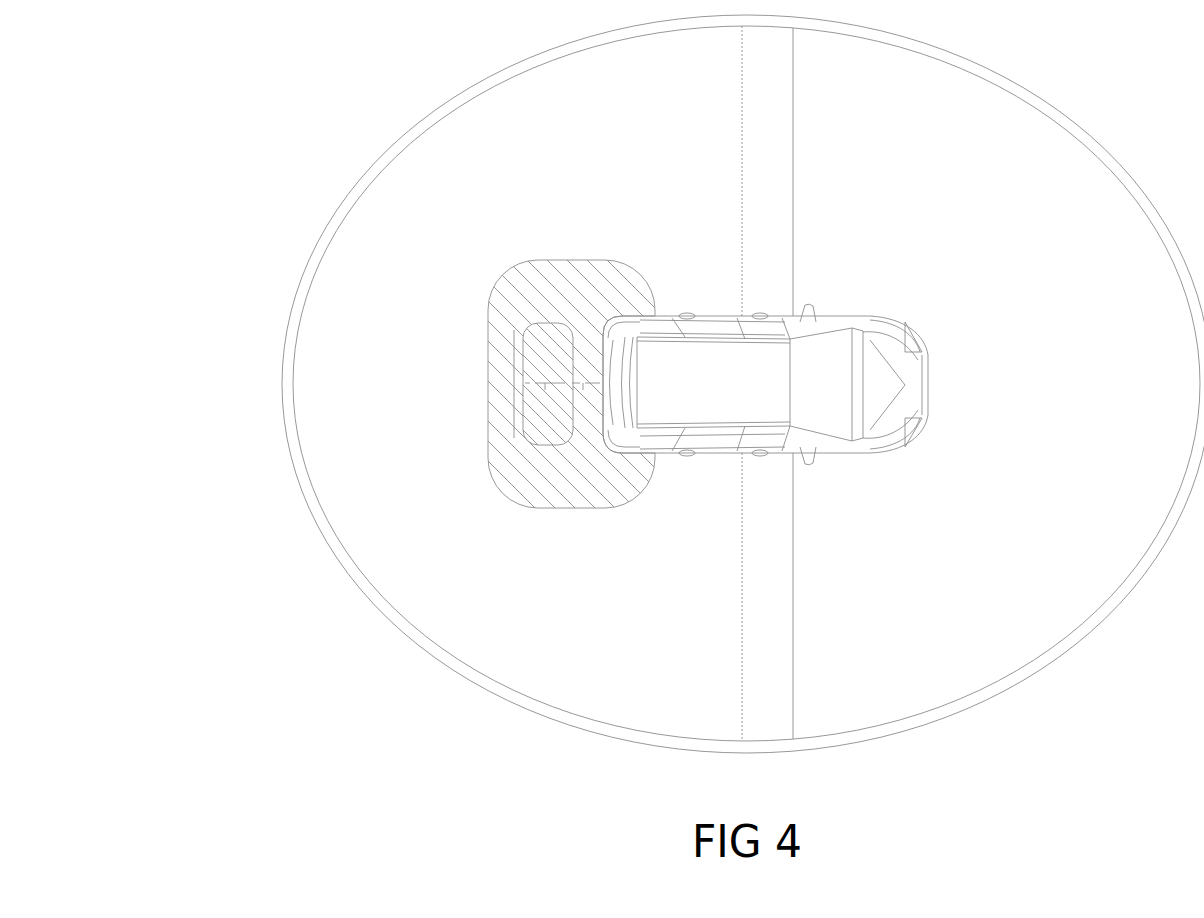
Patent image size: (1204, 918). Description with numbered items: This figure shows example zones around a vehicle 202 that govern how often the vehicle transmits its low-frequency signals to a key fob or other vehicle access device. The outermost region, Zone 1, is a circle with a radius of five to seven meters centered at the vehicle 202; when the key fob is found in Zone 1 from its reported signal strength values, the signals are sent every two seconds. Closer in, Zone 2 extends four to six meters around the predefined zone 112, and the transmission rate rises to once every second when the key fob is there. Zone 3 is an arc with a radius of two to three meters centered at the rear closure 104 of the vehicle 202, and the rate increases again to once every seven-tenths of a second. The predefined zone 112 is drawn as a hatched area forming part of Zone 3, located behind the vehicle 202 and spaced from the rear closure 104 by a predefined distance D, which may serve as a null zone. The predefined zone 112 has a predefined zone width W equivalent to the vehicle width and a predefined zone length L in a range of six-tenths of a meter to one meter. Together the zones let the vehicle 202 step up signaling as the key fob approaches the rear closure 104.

The rear closure 104 is at (610, 322).
The predefined zone 112 is at (550, 343).
The vehicle 202 is at (930, 372).
The predefined zone width W is at (514, 381).
The predefined zone length L is at (545, 392).
The predefined distance D is at (583, 392).
The element Zone 1 is at (1062, 202).
The element Zone 2 is at (390, 228).
The element Zone 3 is at (503, 438).